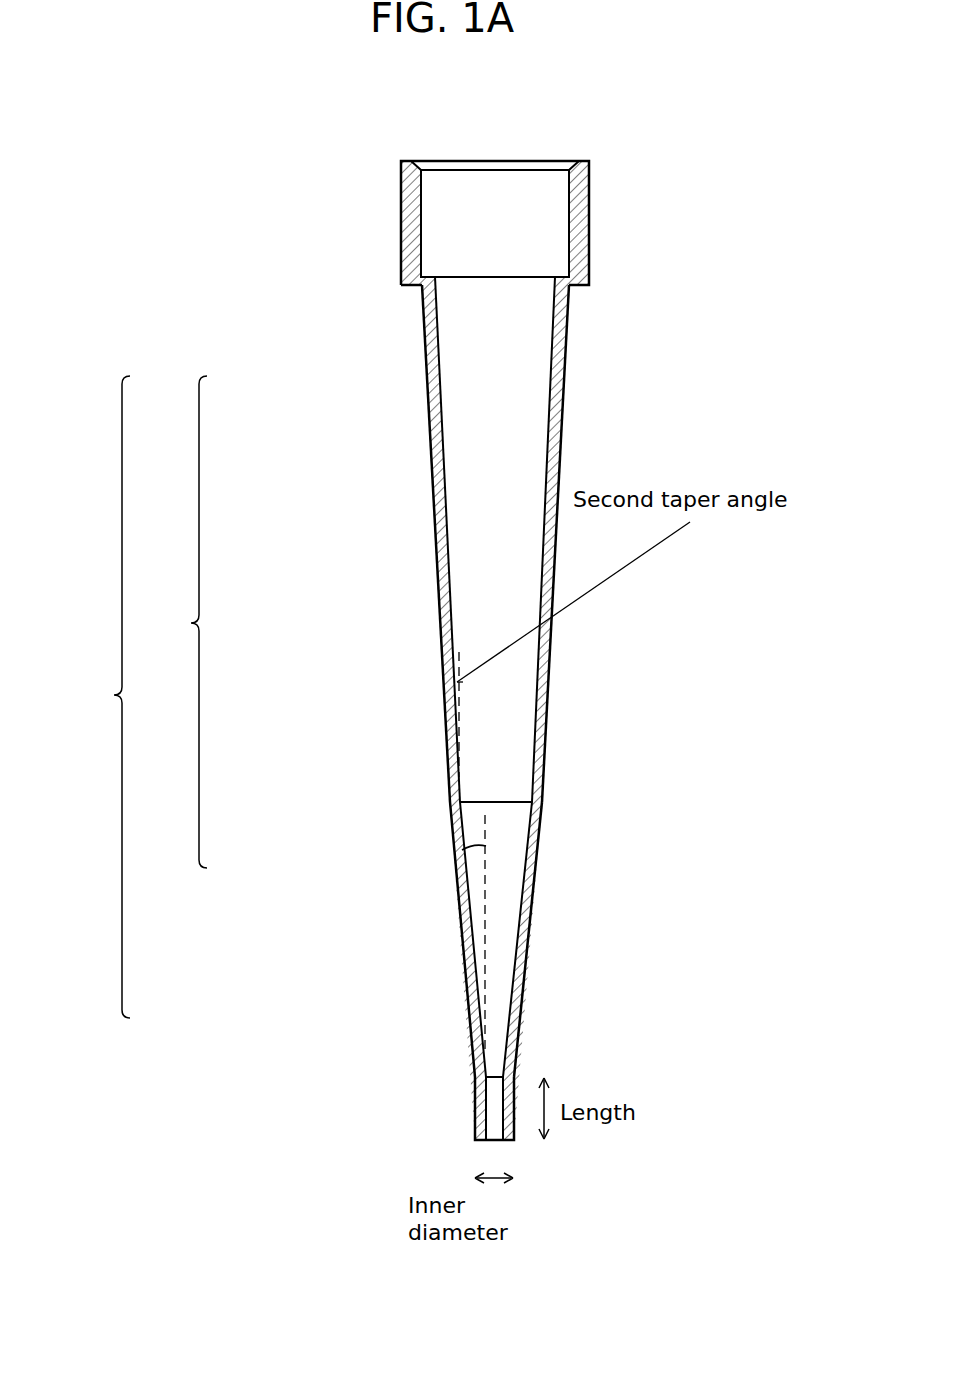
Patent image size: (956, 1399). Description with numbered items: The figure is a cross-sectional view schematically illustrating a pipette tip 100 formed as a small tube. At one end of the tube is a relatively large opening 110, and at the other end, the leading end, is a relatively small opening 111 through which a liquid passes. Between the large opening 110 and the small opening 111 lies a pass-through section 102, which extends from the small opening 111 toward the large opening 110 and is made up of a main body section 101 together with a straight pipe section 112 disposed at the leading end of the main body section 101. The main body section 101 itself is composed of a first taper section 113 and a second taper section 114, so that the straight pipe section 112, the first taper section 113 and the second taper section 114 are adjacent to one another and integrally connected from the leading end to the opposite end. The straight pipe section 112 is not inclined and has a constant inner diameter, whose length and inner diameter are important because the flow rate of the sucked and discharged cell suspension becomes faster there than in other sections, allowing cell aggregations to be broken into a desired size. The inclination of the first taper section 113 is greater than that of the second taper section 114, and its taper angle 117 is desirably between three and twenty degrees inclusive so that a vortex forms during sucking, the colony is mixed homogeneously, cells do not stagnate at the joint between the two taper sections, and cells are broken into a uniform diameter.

The pipette tip 100 is at (388, 122).
The large opening 110 is at (488, 190).
The main body section 101 is at (191, 623).
The pass-through section 102 is at (114, 695).
The second taper section 114 is at (433, 488).
The first taper section 113 is at (463, 945).
The straight pipe section 112 is at (475, 1100).
The small opening 111 is at (497, 1118).
The taper angle 117 is at (470, 847).